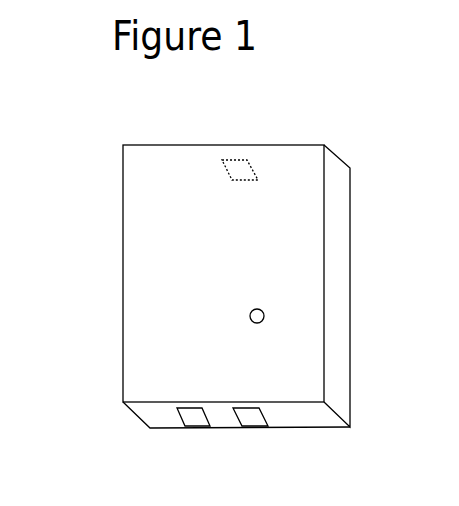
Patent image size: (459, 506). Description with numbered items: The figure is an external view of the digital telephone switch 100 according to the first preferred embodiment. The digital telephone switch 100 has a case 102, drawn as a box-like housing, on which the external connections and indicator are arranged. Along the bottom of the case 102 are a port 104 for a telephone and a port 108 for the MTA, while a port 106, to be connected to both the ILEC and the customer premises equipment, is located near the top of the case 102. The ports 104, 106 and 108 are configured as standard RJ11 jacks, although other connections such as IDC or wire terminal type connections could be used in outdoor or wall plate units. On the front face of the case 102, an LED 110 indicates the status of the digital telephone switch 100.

The digital telephone switch 100 is at (113, 309).
The case 102 is at (123, 206).
The port for a telephone 104 is at (202, 428).
The port to be connected to the ILEC and CPE 106 is at (243, 160).
The port for the MTA 108 is at (250, 428).
The LED 110 is at (264, 313).